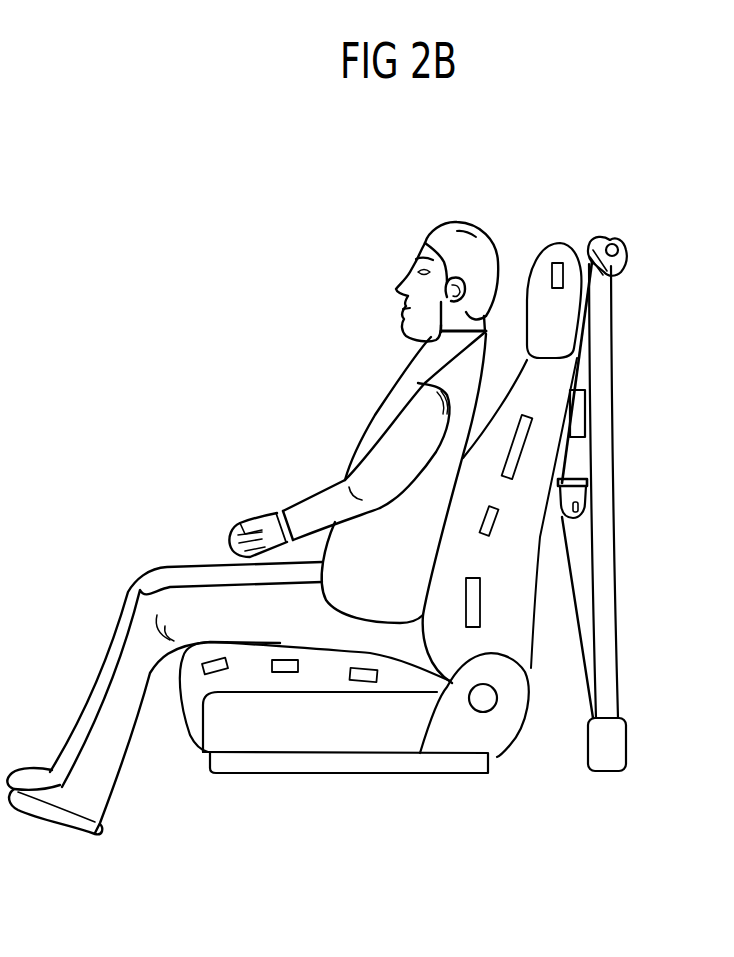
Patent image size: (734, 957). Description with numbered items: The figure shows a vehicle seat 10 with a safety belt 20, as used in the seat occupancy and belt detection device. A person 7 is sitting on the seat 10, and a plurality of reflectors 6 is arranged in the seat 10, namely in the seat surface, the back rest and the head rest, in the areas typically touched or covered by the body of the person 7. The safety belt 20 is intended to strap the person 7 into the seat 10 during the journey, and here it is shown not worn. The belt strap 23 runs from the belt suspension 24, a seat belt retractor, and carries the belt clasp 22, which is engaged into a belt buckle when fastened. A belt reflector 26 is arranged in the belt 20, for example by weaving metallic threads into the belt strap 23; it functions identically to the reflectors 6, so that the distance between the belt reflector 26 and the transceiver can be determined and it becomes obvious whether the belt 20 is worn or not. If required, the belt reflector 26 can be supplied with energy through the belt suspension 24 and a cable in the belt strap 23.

The reflectors 6 is at (557, 266).
The person 7 is at (322, 432).
The seat 10 is at (517, 798).
The safety belt 20 is at (645, 473).
The belt clasp 22 is at (583, 496).
The belt strap 23 is at (608, 557).
The belt suspension 24 is at (612, 243).
The belt reflector 26 is at (582, 400).